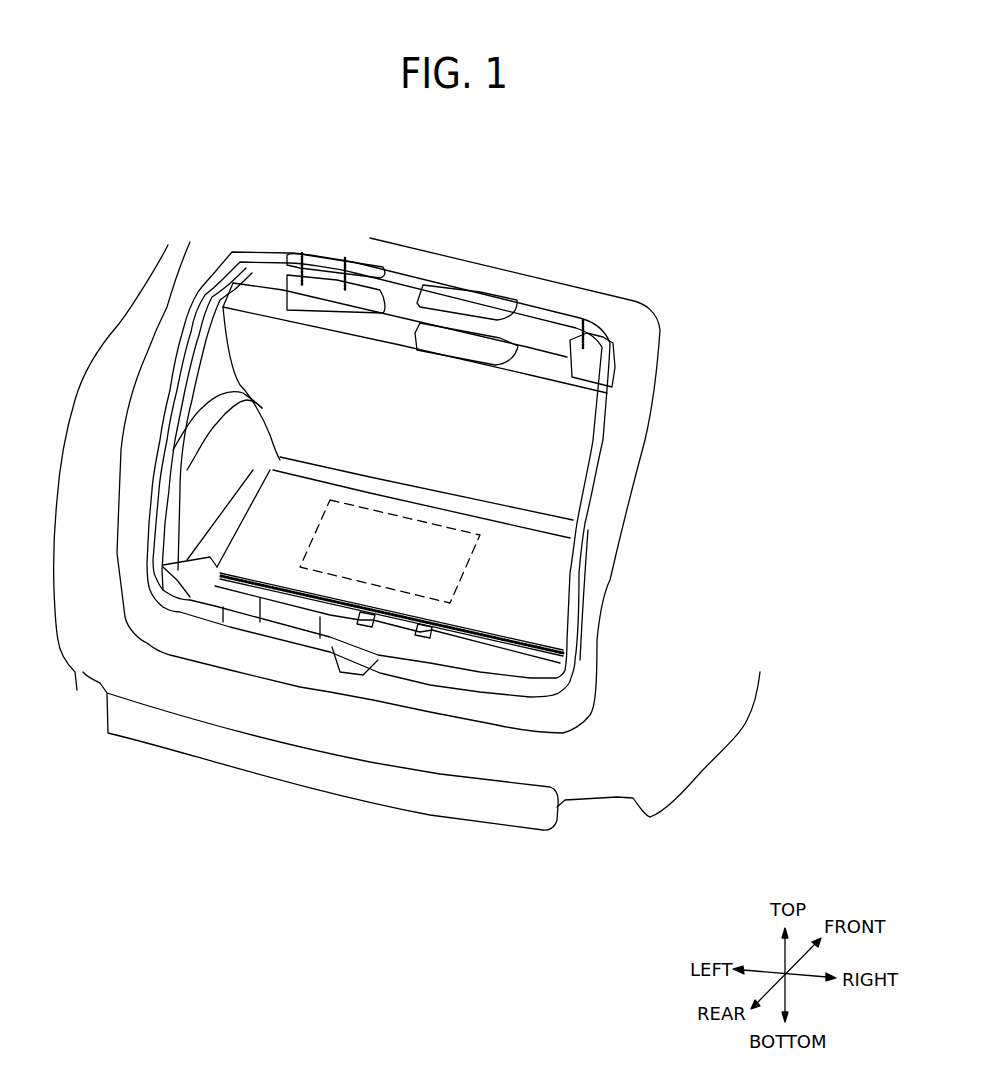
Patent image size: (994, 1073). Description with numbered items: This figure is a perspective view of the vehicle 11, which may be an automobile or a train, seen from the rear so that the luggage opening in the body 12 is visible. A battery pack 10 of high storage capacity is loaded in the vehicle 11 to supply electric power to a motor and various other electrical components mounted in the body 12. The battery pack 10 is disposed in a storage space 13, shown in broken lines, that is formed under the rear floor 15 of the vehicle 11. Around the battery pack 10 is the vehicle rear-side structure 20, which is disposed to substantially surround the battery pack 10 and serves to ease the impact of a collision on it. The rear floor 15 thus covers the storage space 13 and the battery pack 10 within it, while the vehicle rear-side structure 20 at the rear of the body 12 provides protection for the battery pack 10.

The battery pack 10 is at (410, 577).
The vehicle 11 is at (445, 180).
The body 12 is at (563, 283).
The storage space 13 is at (465, 580).
The rear floor 15 is at (502, 608).
The vehicle rear-side structure 20 is at (208, 810).